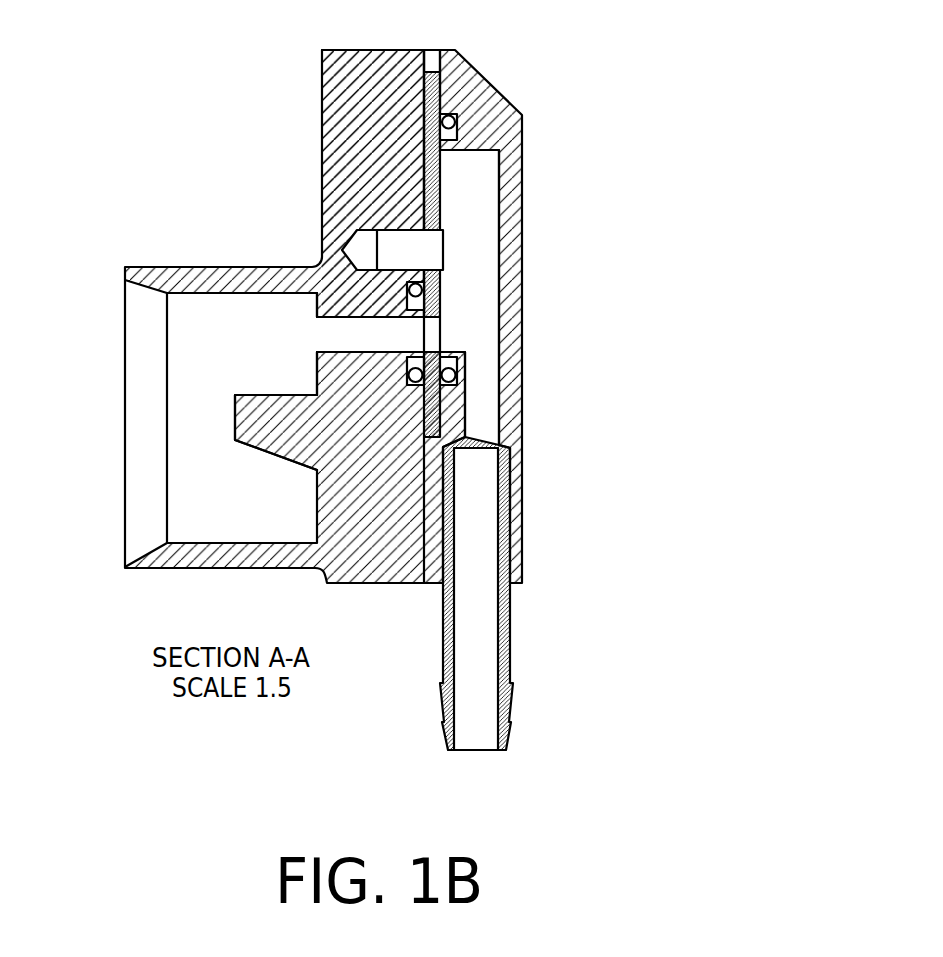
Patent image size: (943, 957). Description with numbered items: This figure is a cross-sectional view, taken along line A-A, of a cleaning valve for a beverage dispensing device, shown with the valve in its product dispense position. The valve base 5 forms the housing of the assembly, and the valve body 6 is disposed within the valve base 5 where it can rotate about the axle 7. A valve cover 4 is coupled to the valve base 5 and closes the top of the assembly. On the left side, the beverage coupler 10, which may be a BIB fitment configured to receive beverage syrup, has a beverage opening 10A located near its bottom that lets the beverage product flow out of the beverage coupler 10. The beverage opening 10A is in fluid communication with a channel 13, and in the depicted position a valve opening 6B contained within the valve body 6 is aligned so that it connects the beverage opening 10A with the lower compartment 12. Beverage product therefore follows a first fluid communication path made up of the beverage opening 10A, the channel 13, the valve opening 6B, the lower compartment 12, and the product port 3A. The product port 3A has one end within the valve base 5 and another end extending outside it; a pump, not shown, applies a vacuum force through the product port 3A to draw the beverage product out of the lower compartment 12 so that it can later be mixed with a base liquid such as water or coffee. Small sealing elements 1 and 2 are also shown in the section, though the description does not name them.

The o-ring seal 1 is at (408, 292).
The o-ring seal 2 is at (458, 126).
The product port 3A is at (508, 732).
The valve cover 4 is at (340, 95).
The valve base 5 is at (522, 115).
The valve body 6 is at (434, 96).
The valve opening 6B is at (428, 335).
The axle 7 is at (400, 250).
The beverage coupler 10 is at (125, 545).
The beverage opening 10A is at (317, 328).
The lower compartment 12 is at (478, 260).
The channel 13 is at (333, 338).